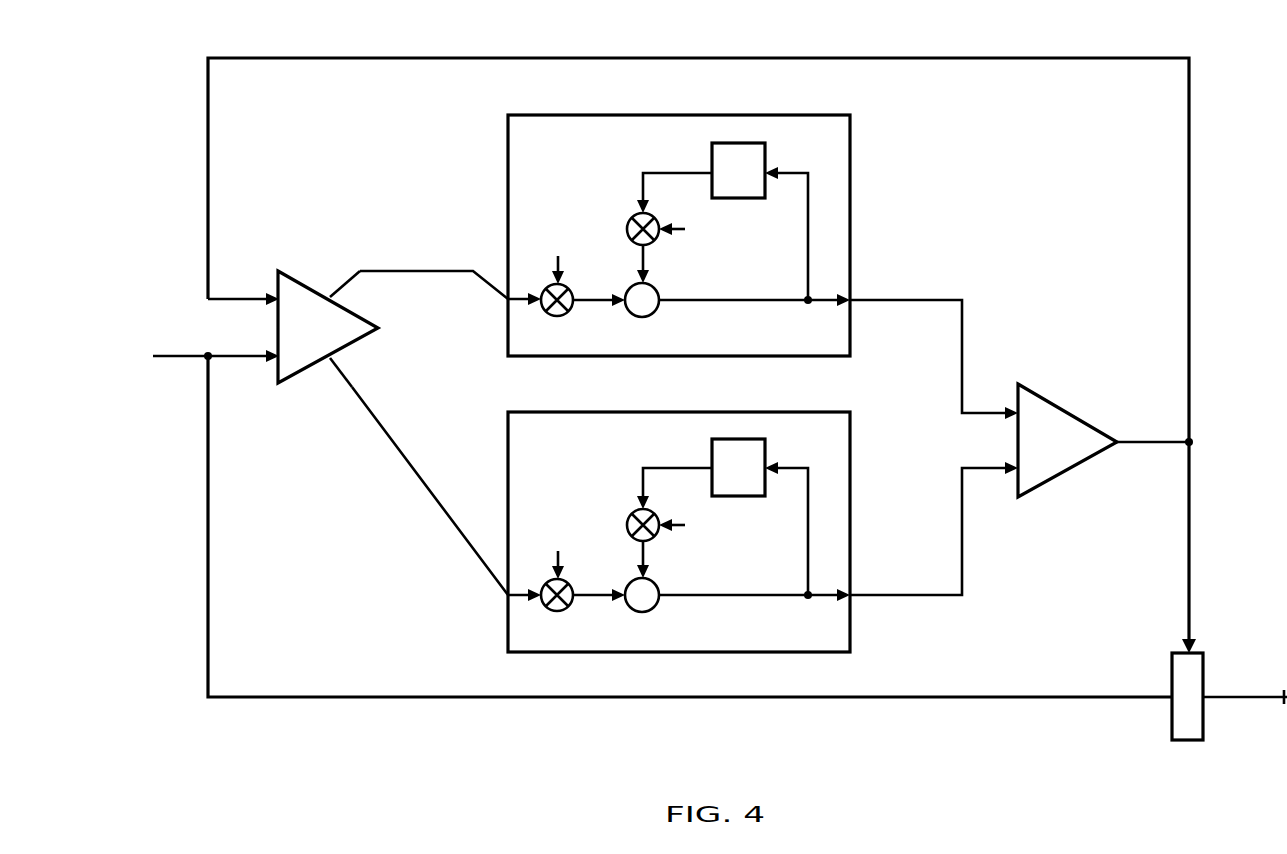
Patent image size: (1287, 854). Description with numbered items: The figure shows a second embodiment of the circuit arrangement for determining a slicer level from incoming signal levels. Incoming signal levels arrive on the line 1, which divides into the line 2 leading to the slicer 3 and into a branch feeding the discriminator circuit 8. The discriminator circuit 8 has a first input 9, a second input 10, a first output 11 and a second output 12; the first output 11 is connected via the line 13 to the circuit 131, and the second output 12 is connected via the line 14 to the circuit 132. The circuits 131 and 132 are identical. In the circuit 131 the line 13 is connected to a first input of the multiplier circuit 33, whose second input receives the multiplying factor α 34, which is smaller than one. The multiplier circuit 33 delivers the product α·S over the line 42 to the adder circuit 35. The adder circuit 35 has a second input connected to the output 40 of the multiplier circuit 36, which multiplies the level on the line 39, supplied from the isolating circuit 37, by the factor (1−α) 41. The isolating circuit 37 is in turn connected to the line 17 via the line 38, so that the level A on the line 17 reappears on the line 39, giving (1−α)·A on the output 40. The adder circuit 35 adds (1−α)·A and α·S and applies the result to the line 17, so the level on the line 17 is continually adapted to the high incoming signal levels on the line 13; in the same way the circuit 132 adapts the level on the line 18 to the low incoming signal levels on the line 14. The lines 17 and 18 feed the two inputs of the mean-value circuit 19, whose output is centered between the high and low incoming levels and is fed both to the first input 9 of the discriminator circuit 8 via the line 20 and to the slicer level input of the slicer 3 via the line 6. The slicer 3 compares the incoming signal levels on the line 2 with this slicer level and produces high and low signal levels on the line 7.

The line 1 is at (170, 366).
The line 2 is at (388, 699).
The slicer 3 is at (1203, 668).
The line 6 is at (1189, 532).
The line 7 is at (1243, 700).
The discriminator circuit 8 is at (378, 332).
The first input 9 is at (278, 292).
The second input 10 is at (278, 374).
The first output 11 is at (330, 296).
The second output 12 is at (330, 360).
The line 13 is at (427, 270).
The line 14 is at (417, 465).
The line 17 is at (920, 299).
The line 18 is at (920, 596).
The mean-value circuit 19 is at (1070, 411).
The line 20 is at (208, 84).
The multiplier circuit 33 is at (548, 287).
The multiplying factor α 34 is at (557, 222).
The adder circuit 35 is at (659, 313).
The multiplier circuit 36 is at (632, 220).
The isolating circuit 37 is at (730, 143).
The line 38 is at (808, 234).
The line 39 is at (670, 172).
The output 40 is at (645, 250).
The factor (1−α) 41 is at (726, 231).
The line 42 is at (590, 303).
The circuit 131 is at (850, 140).
The circuit 132 is at (850, 437).